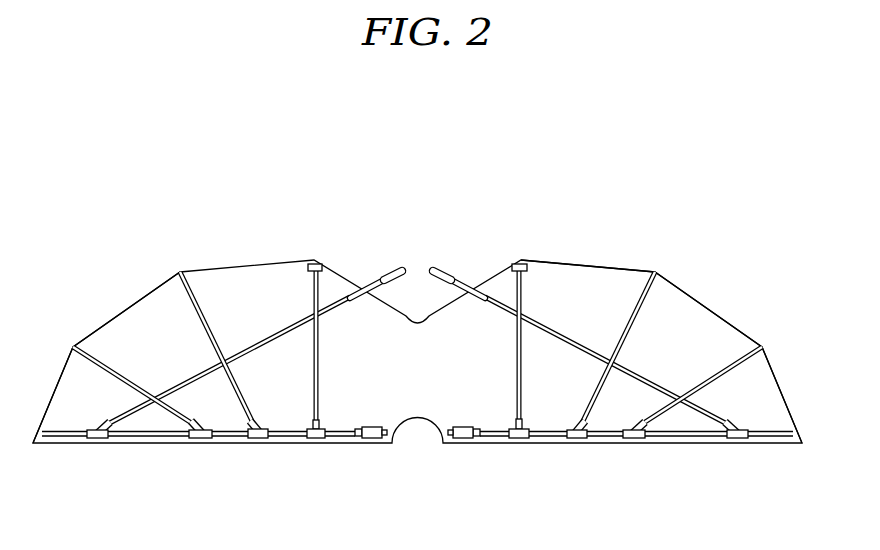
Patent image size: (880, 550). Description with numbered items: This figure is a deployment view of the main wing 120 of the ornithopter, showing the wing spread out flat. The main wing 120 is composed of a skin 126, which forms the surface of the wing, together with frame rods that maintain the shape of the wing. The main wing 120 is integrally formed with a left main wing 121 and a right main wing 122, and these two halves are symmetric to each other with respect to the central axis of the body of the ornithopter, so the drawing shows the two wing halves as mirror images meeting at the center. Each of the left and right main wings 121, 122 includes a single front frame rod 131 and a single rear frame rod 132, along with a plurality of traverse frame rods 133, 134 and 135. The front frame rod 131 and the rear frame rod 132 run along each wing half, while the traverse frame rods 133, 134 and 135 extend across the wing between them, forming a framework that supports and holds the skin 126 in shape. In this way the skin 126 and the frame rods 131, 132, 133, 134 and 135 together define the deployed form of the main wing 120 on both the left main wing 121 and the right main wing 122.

The main wing 120 is at (563, 180).
The left main wing 121 is at (127, 307).
The right main wing 122 is at (708, 307).
The skin 126 is at (560, 287).
The front frame rod 131 is at (545, 437).
The rear frame rod 132 is at (462, 283).
The traverse frame rod 133 is at (513, 418).
The traverse frame rod 134 is at (587, 420).
The traverse frame rod 135 is at (662, 418).